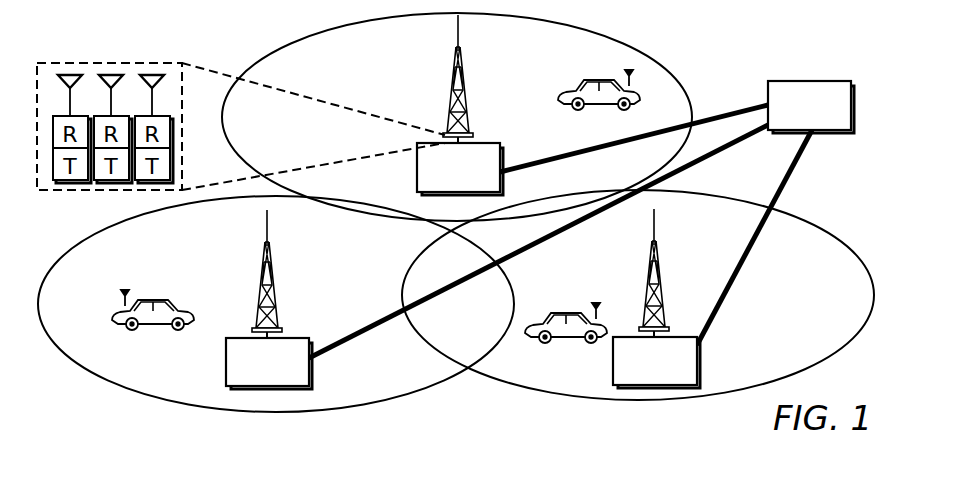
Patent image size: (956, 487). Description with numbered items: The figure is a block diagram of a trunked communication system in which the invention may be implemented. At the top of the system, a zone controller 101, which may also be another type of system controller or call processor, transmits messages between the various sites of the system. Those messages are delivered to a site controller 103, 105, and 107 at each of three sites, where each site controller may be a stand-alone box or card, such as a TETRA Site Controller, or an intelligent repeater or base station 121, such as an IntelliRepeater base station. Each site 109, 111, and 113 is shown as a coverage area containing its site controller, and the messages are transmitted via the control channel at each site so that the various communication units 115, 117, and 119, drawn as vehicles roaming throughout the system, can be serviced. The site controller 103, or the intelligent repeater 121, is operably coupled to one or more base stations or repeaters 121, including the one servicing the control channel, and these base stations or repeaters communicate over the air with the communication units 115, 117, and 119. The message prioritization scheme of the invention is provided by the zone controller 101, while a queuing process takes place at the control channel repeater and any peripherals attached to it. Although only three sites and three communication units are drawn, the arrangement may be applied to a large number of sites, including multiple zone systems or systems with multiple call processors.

The zone controller 101 is at (832, 135).
The site controller 103 is at (486, 143).
The site controller 105 is at (226, 360).
The site controller 107 is at (700, 370).
The site 109 is at (657, 64).
The site 111 is at (108, 383).
The site 113 is at (521, 390).
The communication unit 115 is at (126, 290).
The communication unit 117 is at (628, 70).
The communication unit 119 is at (595, 303).
The base station or repeater 121 is at (183, 62).